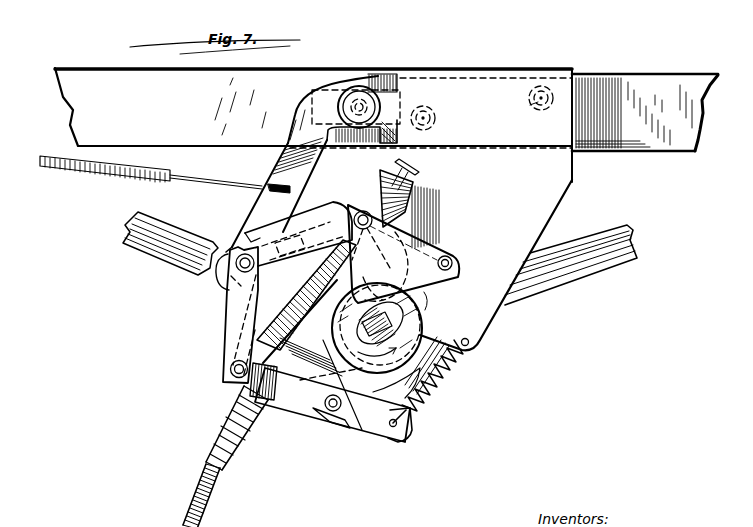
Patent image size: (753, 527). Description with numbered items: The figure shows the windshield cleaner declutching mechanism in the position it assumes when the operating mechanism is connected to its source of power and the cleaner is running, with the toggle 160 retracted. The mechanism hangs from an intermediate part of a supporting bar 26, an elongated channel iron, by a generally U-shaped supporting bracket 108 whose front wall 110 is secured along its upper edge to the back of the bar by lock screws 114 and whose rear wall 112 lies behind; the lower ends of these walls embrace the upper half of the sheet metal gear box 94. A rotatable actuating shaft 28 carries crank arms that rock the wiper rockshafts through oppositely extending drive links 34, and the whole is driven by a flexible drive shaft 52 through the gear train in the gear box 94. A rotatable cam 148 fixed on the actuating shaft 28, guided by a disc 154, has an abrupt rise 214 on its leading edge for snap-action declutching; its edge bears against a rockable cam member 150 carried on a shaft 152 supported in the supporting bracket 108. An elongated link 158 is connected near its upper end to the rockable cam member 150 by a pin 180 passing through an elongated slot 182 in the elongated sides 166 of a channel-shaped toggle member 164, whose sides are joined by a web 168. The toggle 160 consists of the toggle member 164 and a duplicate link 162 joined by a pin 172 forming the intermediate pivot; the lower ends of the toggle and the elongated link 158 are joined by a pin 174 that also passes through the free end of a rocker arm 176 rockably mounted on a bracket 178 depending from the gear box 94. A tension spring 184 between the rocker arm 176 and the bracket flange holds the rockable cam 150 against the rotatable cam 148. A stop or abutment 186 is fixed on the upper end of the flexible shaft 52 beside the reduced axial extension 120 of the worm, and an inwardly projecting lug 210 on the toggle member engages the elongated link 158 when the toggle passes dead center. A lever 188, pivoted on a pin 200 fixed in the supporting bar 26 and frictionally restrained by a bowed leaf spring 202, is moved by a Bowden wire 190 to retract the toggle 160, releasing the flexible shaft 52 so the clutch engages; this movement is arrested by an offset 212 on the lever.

The supporting bar 26 is at (648, 142).
The actuating shaft 28 is at (380, 340).
The drive links 34 is at (135, 244).
The flexible drive shaft 52 is at (212, 490).
The gear box 94 is at (432, 385).
The supporting bracket 108 is at (576, 99).
The front wall 110 is at (533, 110).
The rear wall 112 is at (516, 60).
The lock screws 114 is at (437, 128).
The reduced axial extension 120 is at (423, 130).
The rotatable cams 148 is at (434, 300).
The rockable cam members 150 is at (437, 242).
The shaft 152 is at (451, 260).
The disc 154 is at (480, 330).
The elongated link 158 is at (265, 309).
The toggle 160 is at (236, 238).
The duplicate links 162 is at (230, 338).
The channel-shaped member 164 is at (350, 208).
The elongated sides 166 is at (290, 241).
The web 168 is at (335, 208).
The pins 172 is at (226, 274).
The pins 174 is at (229, 370).
The rocker arms 176 is at (383, 428).
The bracket 178 is at (345, 418).
The pins 180 is at (428, 210).
The elongated slots 182 is at (403, 254).
The tension springs 184 is at (425, 393).
The stop or abutment 186 is at (412, 178).
The lever 188 is at (275, 167).
The Bowden wire 190 is at (165, 182).
The pin 200 is at (356, 88).
The bowed leaf spring 202 is at (382, 78).
The lug 210 is at (240, 237).
The offset 212 is at (300, 137).
The abrupt rise 214 is at (375, 296).